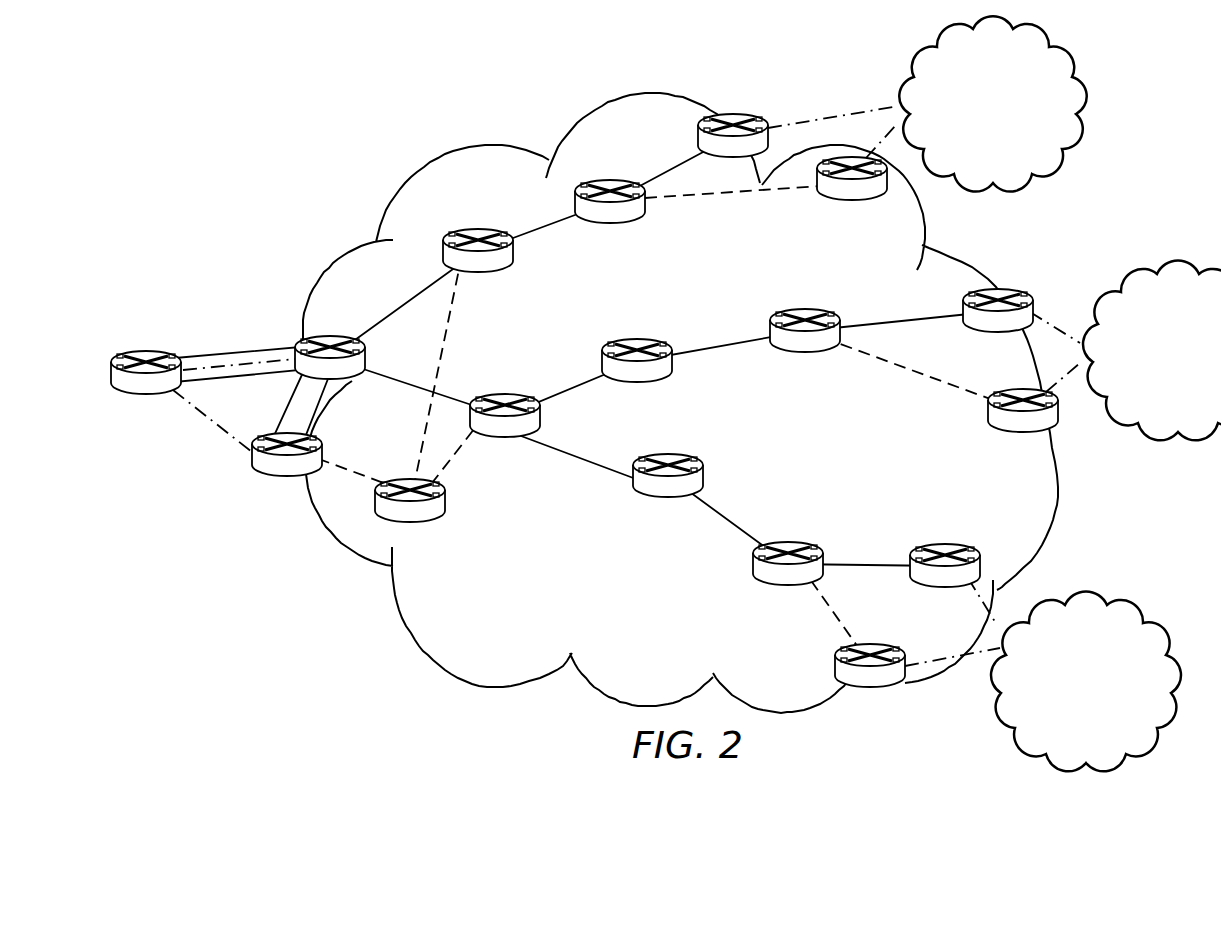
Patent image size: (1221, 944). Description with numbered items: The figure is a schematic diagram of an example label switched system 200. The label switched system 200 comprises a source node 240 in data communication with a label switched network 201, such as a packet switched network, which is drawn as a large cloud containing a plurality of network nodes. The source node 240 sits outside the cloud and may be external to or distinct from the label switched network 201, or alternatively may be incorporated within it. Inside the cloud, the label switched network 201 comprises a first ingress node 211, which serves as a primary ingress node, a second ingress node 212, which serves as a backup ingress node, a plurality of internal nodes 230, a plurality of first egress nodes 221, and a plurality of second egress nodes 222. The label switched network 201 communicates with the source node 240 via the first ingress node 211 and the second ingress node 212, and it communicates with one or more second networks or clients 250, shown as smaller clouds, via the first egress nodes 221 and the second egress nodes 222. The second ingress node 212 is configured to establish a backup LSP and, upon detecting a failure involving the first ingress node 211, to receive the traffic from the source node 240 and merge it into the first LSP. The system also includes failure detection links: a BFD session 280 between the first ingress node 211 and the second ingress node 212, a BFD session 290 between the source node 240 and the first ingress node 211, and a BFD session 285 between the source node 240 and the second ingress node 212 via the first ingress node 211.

The label switched system 200 is at (319, 120).
The label switched network 201 is at (578, 105).
The first ingress node 211 is at (323, 332).
The second ingress node 212 is at (278, 474).
The first egress nodes 221 is at (748, 114).
The second egress nodes 222 is at (848, 196).
The internal nodes 230 is at (628, 220).
The source node 240 is at (155, 350).
The second networks or clients 250 is at (1060, 393).
The BFD session 280 is at (320, 425).
The BFD session 285 is at (204, 382).
The BFD session 290 is at (230, 352).